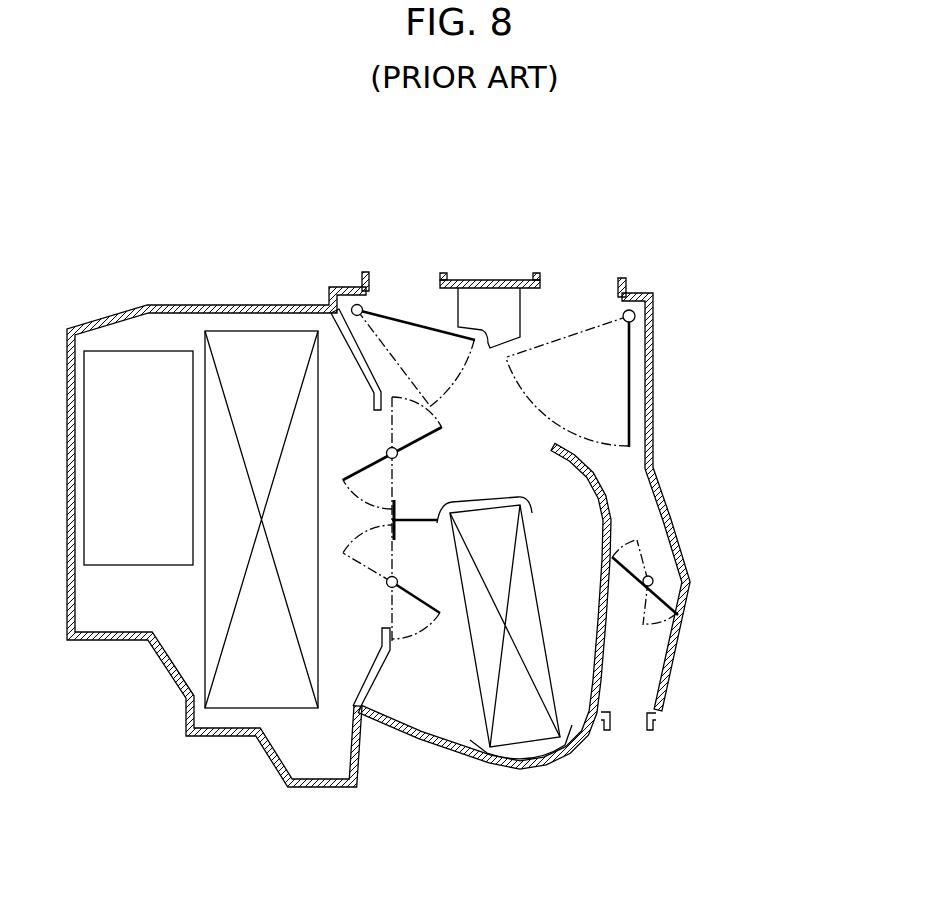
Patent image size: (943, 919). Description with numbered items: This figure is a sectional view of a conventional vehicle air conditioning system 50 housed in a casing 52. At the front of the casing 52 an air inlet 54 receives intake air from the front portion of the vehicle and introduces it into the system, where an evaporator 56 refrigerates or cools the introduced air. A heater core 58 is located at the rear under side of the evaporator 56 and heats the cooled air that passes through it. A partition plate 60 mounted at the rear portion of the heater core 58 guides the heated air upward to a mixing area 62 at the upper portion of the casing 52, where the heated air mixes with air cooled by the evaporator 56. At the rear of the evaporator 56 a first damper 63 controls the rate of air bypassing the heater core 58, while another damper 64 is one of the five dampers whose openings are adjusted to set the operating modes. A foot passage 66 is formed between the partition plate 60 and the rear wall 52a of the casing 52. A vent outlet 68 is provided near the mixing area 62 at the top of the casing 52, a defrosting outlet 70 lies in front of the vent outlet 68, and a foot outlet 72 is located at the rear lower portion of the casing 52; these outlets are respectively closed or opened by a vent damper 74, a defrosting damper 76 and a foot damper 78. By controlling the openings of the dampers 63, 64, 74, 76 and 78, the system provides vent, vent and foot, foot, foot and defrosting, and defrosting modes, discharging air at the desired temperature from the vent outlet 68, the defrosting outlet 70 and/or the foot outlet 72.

The air conditioning system 50 is at (703, 302).
The casing 52 is at (145, 305).
The rear wall 52a is at (687, 520).
The air inlet 54 is at (122, 350).
The evaporator 56 is at (253, 328).
The heater core 58 is at (520, 748).
The partition plate 60 is at (578, 628).
The mixing area 62 is at (483, 417).
The first damper 63 is at (365, 468).
The damper 64 is at (388, 607).
The foot passage 66 is at (635, 510).
The vent outlet 68 is at (575, 285).
The defrosting outlet 70 is at (411, 292).
The foot outlet 72 is at (625, 723).
The vent damper 74 is at (630, 417).
The defrosting damper 76 is at (397, 312).
The foot damper 78 is at (655, 588).